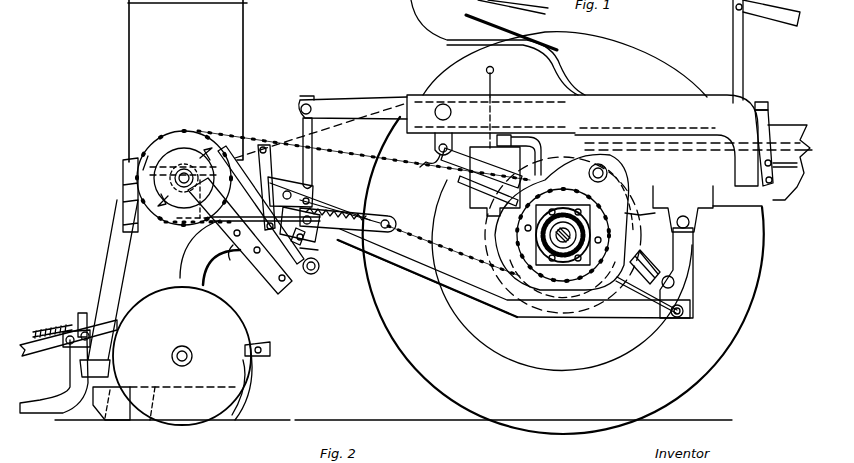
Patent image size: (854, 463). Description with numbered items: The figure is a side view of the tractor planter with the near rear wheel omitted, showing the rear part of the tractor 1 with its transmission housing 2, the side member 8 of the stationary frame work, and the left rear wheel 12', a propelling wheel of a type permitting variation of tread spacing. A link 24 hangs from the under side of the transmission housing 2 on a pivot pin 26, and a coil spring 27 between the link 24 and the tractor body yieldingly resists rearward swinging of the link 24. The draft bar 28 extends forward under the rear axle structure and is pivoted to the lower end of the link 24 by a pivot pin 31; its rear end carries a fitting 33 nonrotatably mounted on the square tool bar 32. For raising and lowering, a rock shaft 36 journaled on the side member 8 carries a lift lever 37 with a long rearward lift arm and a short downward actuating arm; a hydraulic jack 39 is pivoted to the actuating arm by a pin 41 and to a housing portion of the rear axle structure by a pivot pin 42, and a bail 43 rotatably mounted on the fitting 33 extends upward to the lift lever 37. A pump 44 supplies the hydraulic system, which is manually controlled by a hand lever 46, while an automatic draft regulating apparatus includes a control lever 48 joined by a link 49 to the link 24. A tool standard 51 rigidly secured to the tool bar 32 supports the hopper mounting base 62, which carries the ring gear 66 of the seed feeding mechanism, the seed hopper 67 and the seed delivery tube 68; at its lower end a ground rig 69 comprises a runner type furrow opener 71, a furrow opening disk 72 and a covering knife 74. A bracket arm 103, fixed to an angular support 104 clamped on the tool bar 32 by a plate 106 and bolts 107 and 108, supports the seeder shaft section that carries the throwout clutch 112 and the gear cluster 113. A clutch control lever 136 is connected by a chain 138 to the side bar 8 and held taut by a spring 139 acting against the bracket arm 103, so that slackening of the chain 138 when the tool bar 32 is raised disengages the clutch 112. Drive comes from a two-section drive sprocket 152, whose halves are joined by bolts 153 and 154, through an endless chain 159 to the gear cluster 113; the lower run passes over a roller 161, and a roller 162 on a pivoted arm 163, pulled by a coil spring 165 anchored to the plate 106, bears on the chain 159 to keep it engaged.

The tractor 1 is at (800, 80).
The transmission housing 2 is at (695, 148).
The side member 8 is at (548, 95).
The rear wheel 12' is at (563, 275).
The link 24 is at (695, 262).
The pivot pin 26 is at (685, 212).
The coil spring 27 is at (645, 250).
The draft bar 28 is at (430, 283).
The pivot pin 31 is at (677, 318).
The tool bar 32 is at (303, 268).
The fitting 33 is at (292, 177).
The rock shaft 36 is at (443, 104).
The lift lever 37 is at (336, 99).
The hydraulic jack 39 is at (440, 162).
The pin 41 is at (434, 146).
The pivot pin 42 is at (500, 233).
The bail 43 is at (301, 113).
The pump 44 is at (480, 205).
The hand lever 46 is at (494, 70).
The control lever 48 is at (452, 162).
The link 49 is at (640, 290).
The tool standard 51 is at (204, 288).
The hopper mounting base 62 is at (200, 223).
The ring gear 66 is at (141, 158).
The seed hopper 67 is at (132, 56).
The seed delivery tube 68 is at (112, 248).
The ground rig 69 is at (250, 338).
The runner type furrow opener 71 is at (255, 382).
The furrow opening disk 72 is at (170, 292).
The covering knife 74 is at (58, 385).
The bracket arm 103 is at (233, 255).
The angular support 104 is at (300, 270).
The plate 106 is at (307, 238).
The bolt 107 is at (305, 252).
The bolt 108 is at (262, 285).
The throwout clutch 112 is at (191, 148).
The gear cluster 113 is at (123, 182).
The clutch control lever 136 is at (270, 135).
The chain 138 is at (392, 88).
The spring 139 is at (188, 250).
The drive sprocket 152 is at (540, 284).
The bolt 153 is at (628, 212).
The bolt 154 is at (500, 246).
The endless chain 159 is at (395, 200).
The roller 161 is at (345, 206).
The roller 162 is at (396, 222).
The arm 163 is at (368, 205).
The coil spring 165 is at (360, 214).